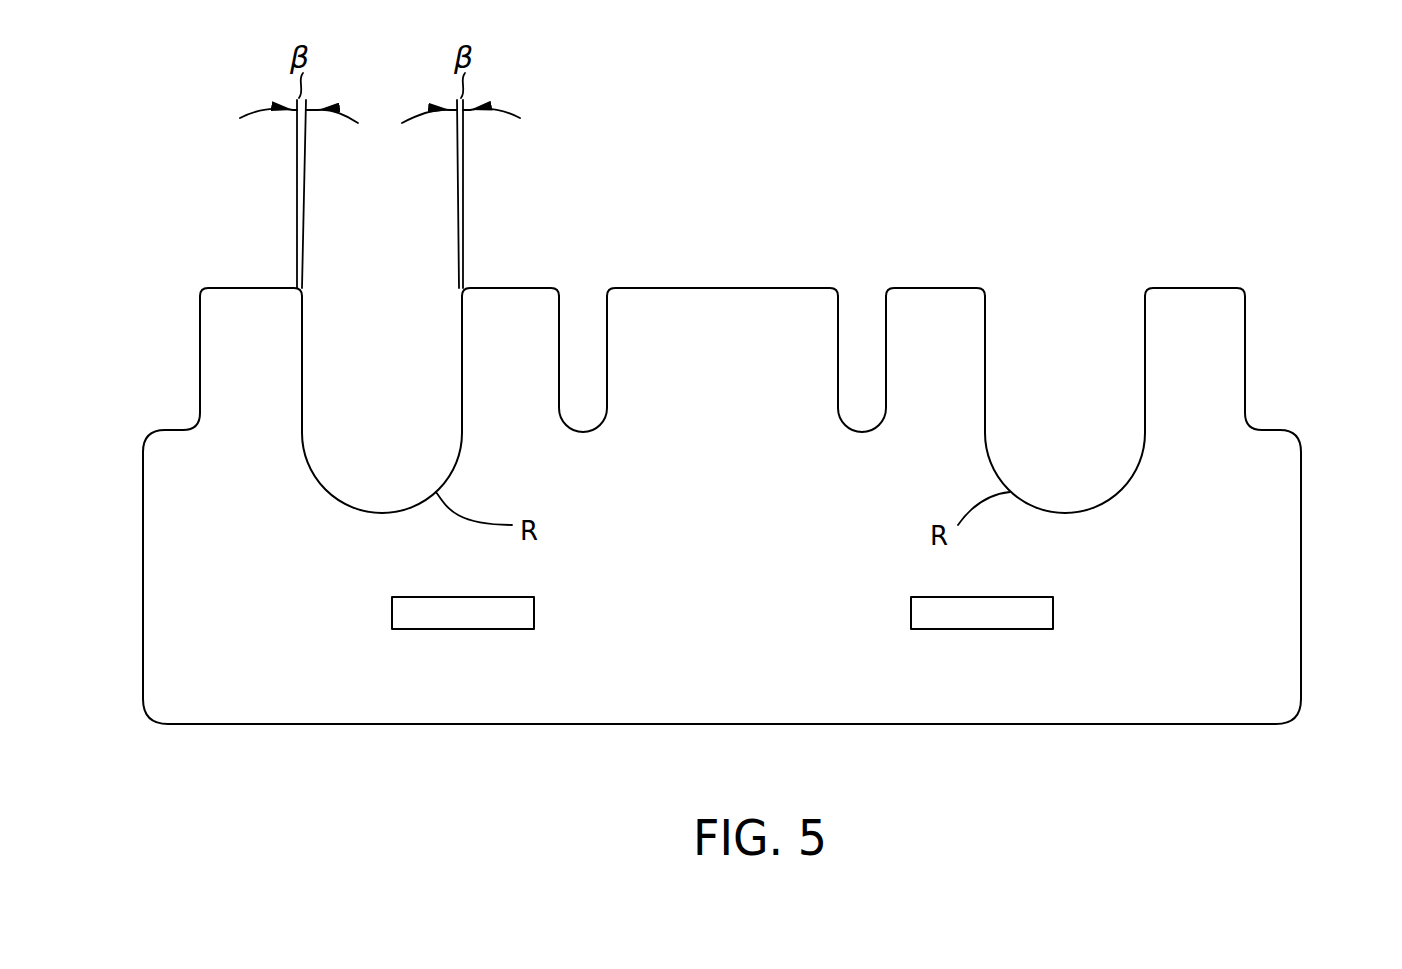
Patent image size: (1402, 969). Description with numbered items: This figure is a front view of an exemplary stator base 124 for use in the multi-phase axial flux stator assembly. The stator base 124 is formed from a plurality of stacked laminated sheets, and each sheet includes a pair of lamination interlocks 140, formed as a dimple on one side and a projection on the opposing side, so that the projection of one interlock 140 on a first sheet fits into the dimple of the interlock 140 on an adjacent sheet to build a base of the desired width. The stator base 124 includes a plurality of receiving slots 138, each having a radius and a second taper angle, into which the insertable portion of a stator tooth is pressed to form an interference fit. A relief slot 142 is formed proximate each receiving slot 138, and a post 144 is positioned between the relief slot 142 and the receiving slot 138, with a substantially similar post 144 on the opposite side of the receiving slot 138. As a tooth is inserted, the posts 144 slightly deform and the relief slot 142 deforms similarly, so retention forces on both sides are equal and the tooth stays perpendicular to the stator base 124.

The stator base 124 is at (1200, 160).
The receiving slot 138 is at (348, 445).
The lamination interlock 140 is at (457, 613).
The relief slot 142 is at (585, 364).
The post 144 is at (527, 308).